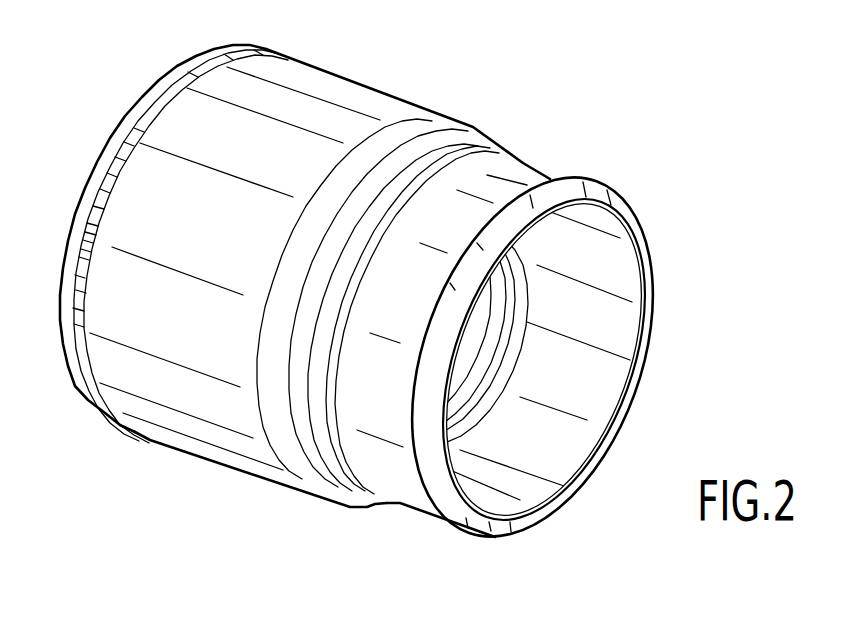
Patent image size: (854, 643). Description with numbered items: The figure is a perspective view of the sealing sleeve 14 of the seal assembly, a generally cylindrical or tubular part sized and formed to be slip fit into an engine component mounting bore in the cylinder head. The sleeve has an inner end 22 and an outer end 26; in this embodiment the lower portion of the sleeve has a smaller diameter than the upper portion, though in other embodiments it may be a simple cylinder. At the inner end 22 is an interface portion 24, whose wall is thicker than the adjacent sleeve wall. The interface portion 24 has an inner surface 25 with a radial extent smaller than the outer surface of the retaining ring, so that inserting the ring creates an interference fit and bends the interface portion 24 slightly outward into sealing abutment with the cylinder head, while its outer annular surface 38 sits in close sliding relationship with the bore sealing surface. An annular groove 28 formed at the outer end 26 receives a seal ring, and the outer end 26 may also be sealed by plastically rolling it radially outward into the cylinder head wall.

The sealing sleeve 14 is at (391, 317).
The inner end 22 is at (640, 212).
The interface portion 24 is at (399, 506).
The inner surface 25 is at (600, 363).
The outer end 26 is at (93, 142).
The annular groove 28 is at (85, 357).
The outer annular surface 38 is at (515, 181).